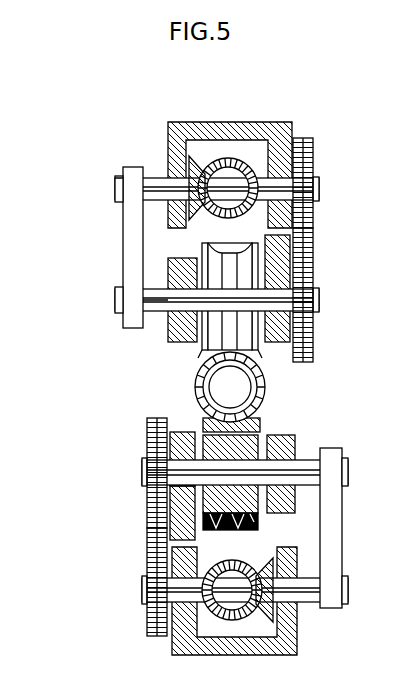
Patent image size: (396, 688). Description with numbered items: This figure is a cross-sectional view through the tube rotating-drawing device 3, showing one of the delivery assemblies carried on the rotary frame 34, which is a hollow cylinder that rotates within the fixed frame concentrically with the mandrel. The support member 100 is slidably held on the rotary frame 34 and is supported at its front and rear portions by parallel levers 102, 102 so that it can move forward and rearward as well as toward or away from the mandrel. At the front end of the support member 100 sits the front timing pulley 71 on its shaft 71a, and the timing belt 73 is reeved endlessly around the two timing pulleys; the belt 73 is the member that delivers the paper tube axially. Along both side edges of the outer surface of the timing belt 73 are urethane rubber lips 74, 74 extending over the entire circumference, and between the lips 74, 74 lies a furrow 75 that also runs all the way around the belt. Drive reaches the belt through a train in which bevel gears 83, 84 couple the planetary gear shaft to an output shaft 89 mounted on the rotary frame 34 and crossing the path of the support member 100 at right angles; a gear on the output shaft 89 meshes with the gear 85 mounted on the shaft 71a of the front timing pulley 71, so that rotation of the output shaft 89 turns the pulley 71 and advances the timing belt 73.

The tube rotating-drawing device 3 is at (114, 307).
The rotary frame 34 is at (299, 127).
The front timing pulley 71 is at (186, 342).
The shaft of the front timing pulley 71a is at (168, 330).
The timing belt 73 is at (305, 329).
The urethane rubber lips 74 is at (205, 360).
The furrow 75 is at (226, 246).
The bevel gear 83 is at (227, 158).
The bevel gear 84 is at (313, 162).
The gear 85 is at (311, 282).
The output shaft 89 is at (319, 190).
The support member 100 is at (313, 245).
The parallel levers 102 is at (123, 243).